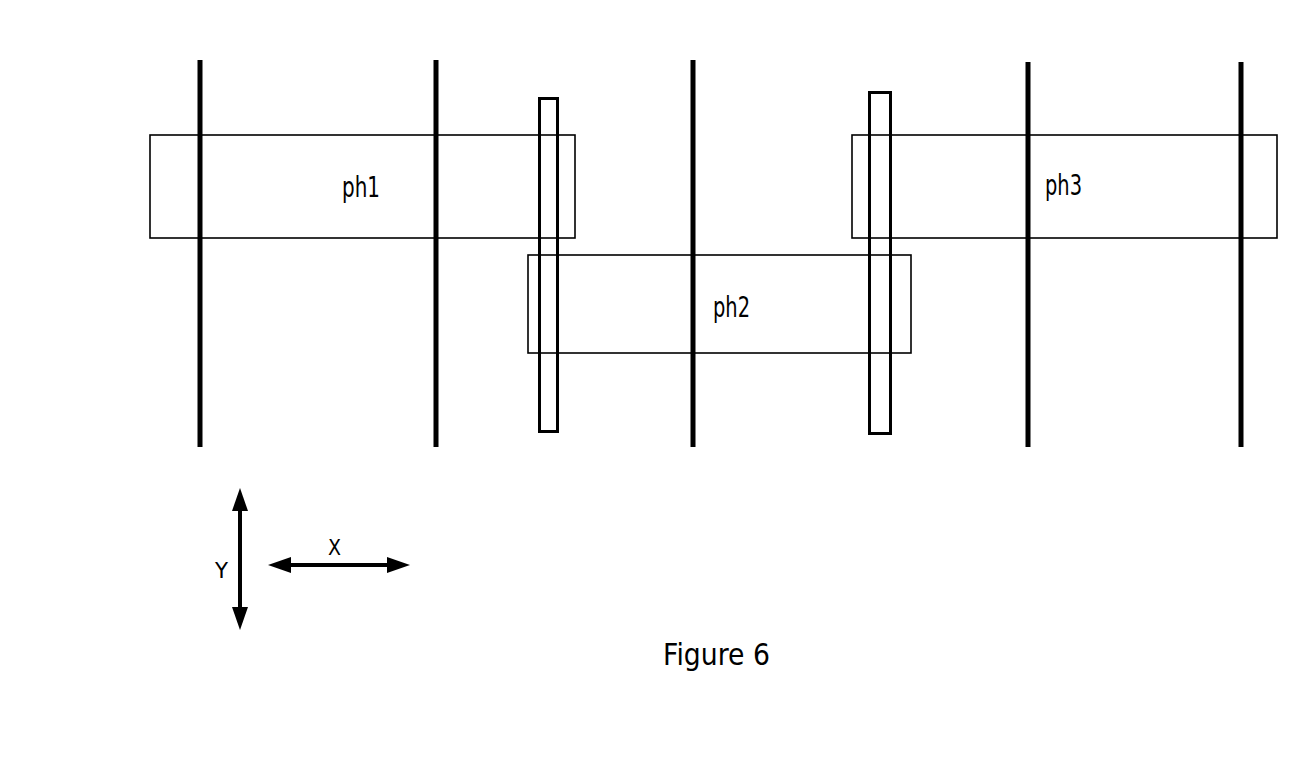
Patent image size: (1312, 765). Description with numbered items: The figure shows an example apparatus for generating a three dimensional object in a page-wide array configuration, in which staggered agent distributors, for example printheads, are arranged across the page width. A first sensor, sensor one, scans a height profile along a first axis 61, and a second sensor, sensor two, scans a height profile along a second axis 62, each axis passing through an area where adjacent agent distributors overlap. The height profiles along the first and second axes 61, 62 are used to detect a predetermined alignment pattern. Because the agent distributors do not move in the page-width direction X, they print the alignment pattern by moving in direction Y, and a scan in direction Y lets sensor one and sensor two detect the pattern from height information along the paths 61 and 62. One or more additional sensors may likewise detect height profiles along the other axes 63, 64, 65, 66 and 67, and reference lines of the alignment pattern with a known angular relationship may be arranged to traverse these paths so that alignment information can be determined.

The first axis 61 is at (548, 433).
The second axis 62 is at (879, 436).
The additional axis 63 is at (202, 372).
The additional path 64 is at (438, 382).
The additional axis 65 is at (696, 378).
The additional axis 66 is at (1031, 380).
The additional axis 67 is at (1244, 383).